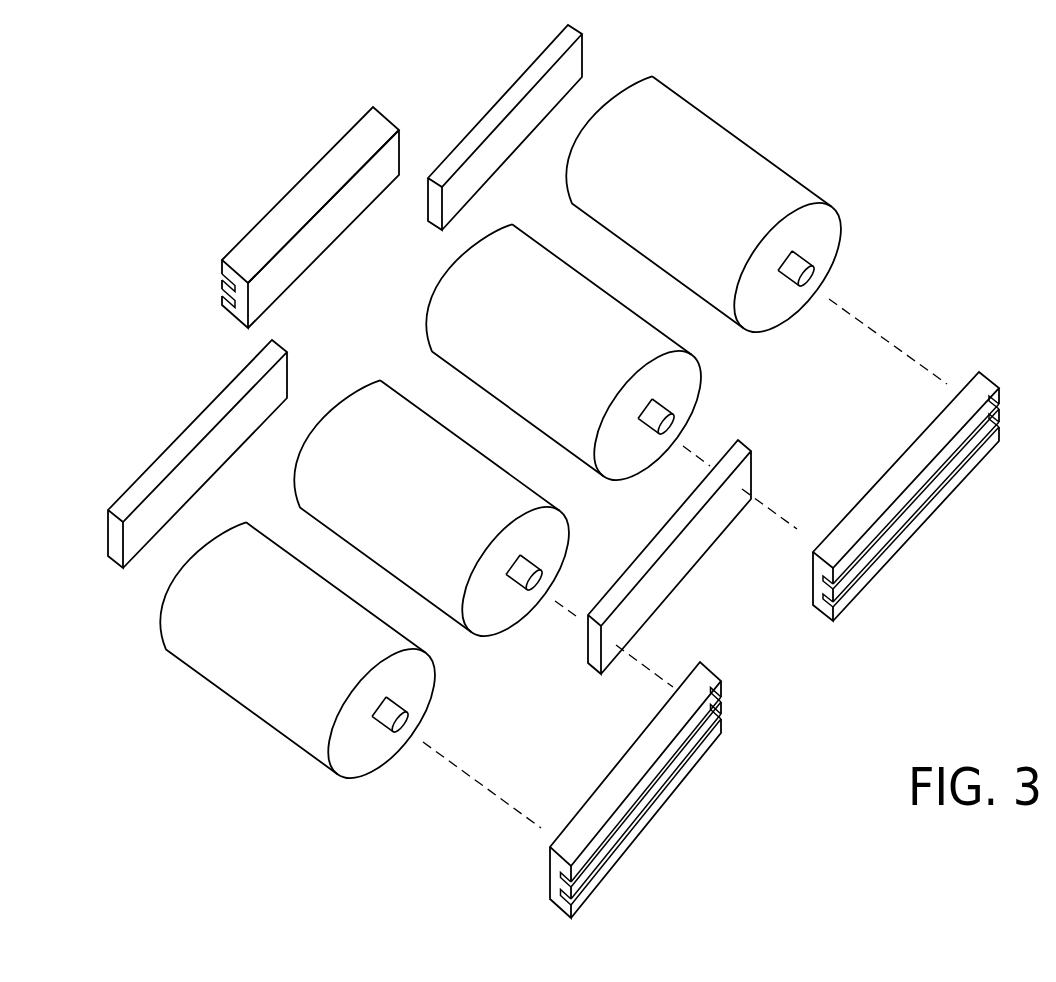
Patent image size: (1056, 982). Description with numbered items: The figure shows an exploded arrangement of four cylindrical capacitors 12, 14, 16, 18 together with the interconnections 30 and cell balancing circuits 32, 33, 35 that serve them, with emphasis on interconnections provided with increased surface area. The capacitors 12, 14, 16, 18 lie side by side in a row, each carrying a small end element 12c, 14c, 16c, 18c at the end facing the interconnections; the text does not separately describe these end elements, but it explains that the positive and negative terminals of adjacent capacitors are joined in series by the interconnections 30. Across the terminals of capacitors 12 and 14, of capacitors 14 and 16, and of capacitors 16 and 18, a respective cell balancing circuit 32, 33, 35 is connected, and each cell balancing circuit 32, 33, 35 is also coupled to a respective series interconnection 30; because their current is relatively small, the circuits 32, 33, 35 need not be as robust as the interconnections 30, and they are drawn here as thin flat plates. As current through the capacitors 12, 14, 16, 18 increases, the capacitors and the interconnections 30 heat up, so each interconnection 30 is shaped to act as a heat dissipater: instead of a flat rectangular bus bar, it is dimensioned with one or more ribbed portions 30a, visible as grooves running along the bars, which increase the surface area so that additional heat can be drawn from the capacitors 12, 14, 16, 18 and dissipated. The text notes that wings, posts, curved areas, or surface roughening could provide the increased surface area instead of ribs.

The capacitor 12 is at (296, 651).
The roller shaft end 12c is at (403, 734).
The capacitor 14 is at (430, 509).
The roller shaft end 14c is at (545, 576).
The capacitor 16 is at (562, 353).
The roller shaft end 16c is at (677, 432).
The capacitor 18 is at (702, 205).
The roller shaft end 18c is at (810, 267).
The interconnection 30 is at (610, 512).
The ribbed portion 30a is at (223, 283).
The cell balancing circuit 32 is at (108, 527).
The cell balancing circuit 33 is at (683, 556).
The cell balancing circuit 35 is at (487, 112).